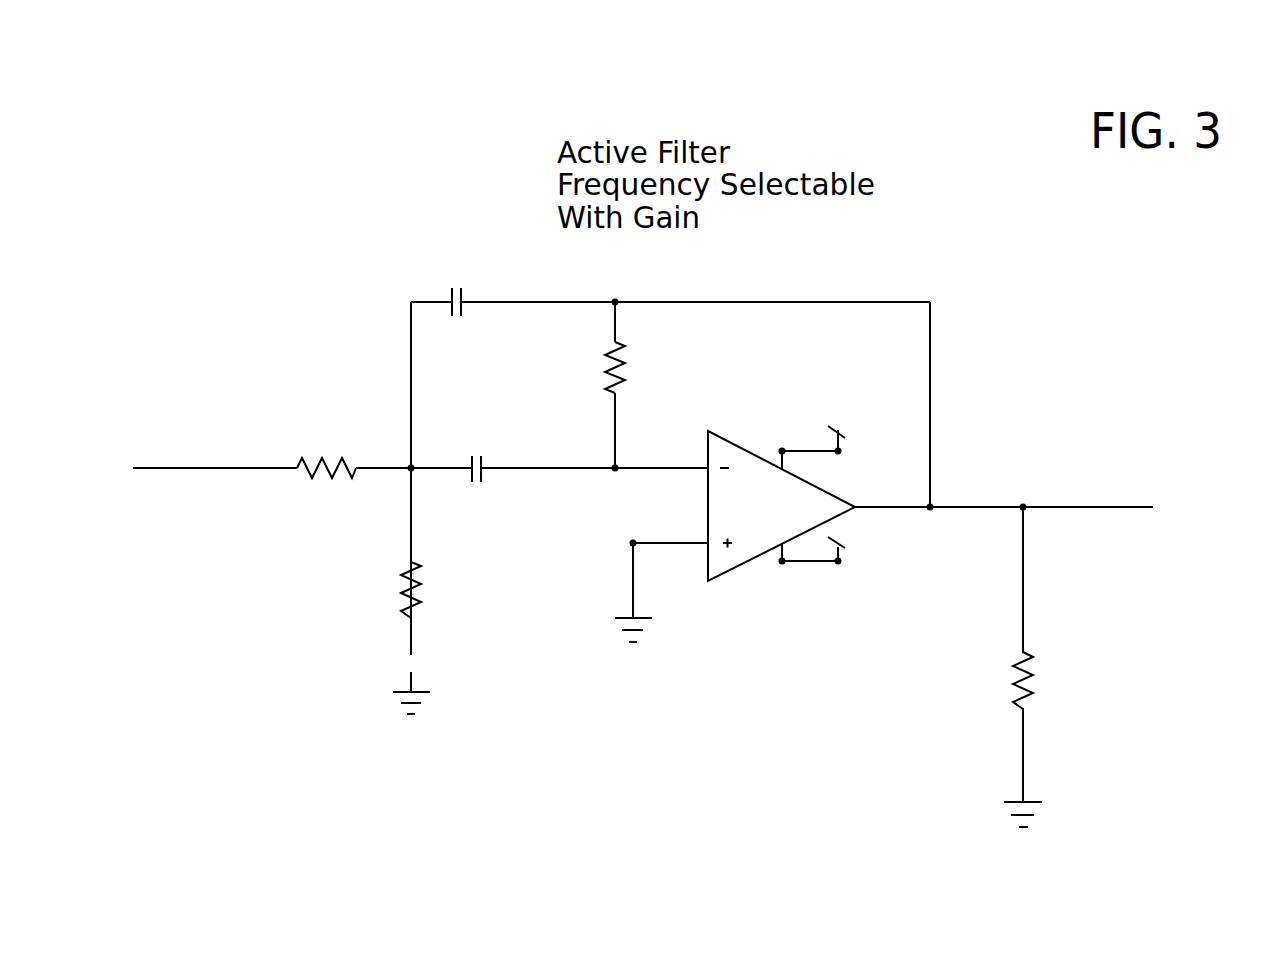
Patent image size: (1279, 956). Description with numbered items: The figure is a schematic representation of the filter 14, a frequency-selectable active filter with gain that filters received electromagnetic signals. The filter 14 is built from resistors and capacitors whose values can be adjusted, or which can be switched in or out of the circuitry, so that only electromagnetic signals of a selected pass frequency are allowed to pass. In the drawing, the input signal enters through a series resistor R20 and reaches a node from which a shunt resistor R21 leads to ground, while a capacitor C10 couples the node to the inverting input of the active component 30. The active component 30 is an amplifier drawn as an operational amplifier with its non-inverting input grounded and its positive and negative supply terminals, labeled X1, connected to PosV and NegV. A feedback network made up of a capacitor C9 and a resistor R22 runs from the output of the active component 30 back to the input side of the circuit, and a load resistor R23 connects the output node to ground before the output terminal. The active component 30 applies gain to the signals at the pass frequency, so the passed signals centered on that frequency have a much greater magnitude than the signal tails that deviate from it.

The filter 14 is at (668, 434).
The active component 30 is at (745, 562).
The input resistor R20 is at (329, 451).
The shunt resistor R21 is at (444, 590).
The feedback resistor R22 is at (650, 367).
The output load resistor R23 is at (1059, 680).
The feedback capacitor C9 is at (461, 284).
The series capacitor C10 is at (501, 452).
The op-amp supply terminals X1 is at (845, 480).